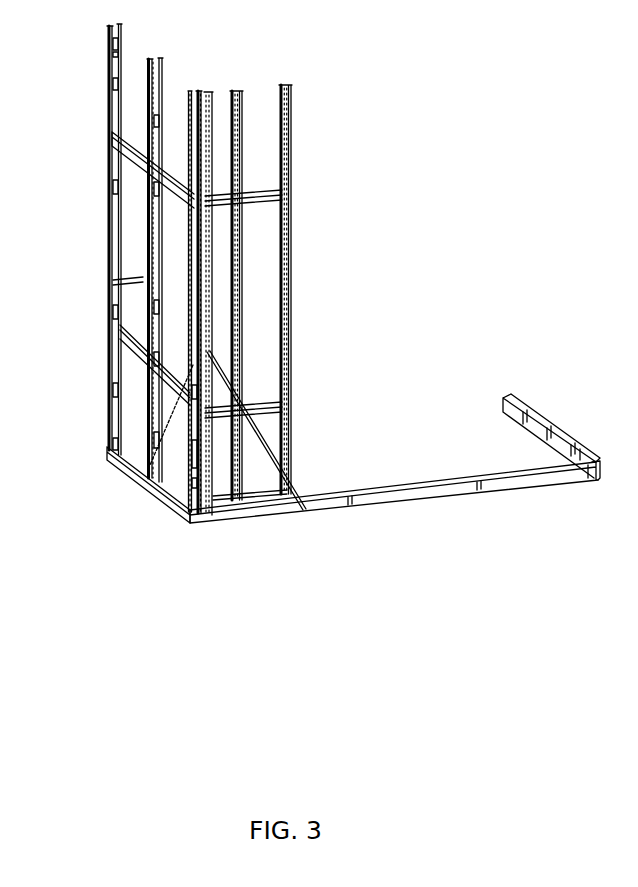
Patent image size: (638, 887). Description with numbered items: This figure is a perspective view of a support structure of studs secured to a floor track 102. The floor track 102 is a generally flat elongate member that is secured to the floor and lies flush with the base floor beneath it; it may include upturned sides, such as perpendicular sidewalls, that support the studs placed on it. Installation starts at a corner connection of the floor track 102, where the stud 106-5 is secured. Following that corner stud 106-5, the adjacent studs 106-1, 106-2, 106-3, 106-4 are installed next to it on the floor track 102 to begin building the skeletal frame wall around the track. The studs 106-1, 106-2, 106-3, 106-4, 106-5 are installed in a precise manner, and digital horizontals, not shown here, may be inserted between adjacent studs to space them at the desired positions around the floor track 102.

The floor track 102 is at (258, 513).
The stud 106-1 is at (108, 180).
The stud 106-2 is at (148, 303).
The stud 106-3 is at (292, 140).
The stud 106-4 is at (243, 103).
The stud at the corner connection 106-5 is at (185, 468).